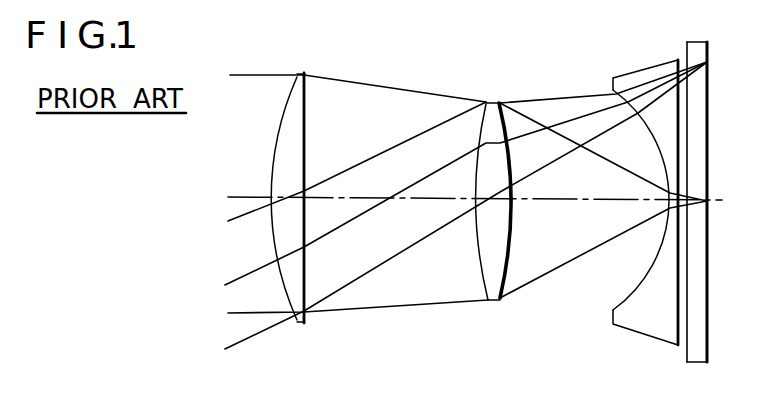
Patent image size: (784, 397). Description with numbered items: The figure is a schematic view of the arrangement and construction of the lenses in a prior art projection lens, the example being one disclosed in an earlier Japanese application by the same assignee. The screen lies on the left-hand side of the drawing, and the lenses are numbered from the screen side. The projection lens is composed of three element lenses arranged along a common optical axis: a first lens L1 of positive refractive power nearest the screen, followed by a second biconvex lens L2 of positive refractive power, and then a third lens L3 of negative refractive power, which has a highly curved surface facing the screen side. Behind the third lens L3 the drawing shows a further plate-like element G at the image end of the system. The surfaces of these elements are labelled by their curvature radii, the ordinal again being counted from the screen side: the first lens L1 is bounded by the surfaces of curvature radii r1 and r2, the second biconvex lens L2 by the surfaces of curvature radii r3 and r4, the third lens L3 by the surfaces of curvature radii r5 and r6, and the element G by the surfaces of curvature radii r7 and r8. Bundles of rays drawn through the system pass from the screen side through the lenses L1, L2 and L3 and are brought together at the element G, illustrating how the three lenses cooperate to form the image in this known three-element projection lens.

The first lens L1 is at (299, 72).
The second biconvex lens L2 is at (487, 101).
The third lens L3 is at (640, 73).
The glass plate / image plane cover glass G is at (704, 30).
The curvature radius of the first lens surface r1 is at (290, 318).
The curvature radius of the second lens surface r2 is at (309, 316).
The curvature radius of the third lens surface r3 is at (484, 294).
The curvature radius of the fourth lens surface r4 is at (508, 292).
The curvature radius of the fifth lens surface r5 is at (614, 311).
The curvature radius of the sixth lens surface r6 is at (675, 335).
The curvature radius of the seventh lens surface r7 is at (672, 219).
The curvature radius of the eighth lens surface r8 is at (723, 219).